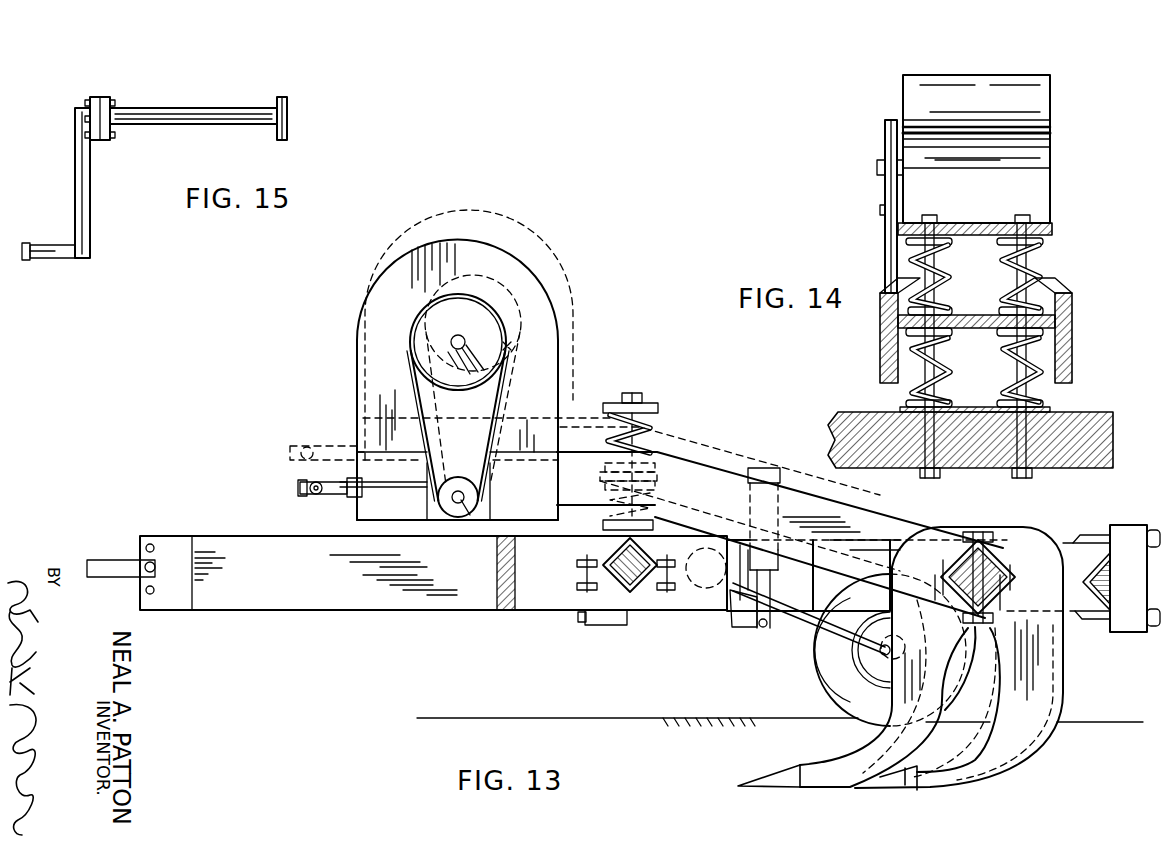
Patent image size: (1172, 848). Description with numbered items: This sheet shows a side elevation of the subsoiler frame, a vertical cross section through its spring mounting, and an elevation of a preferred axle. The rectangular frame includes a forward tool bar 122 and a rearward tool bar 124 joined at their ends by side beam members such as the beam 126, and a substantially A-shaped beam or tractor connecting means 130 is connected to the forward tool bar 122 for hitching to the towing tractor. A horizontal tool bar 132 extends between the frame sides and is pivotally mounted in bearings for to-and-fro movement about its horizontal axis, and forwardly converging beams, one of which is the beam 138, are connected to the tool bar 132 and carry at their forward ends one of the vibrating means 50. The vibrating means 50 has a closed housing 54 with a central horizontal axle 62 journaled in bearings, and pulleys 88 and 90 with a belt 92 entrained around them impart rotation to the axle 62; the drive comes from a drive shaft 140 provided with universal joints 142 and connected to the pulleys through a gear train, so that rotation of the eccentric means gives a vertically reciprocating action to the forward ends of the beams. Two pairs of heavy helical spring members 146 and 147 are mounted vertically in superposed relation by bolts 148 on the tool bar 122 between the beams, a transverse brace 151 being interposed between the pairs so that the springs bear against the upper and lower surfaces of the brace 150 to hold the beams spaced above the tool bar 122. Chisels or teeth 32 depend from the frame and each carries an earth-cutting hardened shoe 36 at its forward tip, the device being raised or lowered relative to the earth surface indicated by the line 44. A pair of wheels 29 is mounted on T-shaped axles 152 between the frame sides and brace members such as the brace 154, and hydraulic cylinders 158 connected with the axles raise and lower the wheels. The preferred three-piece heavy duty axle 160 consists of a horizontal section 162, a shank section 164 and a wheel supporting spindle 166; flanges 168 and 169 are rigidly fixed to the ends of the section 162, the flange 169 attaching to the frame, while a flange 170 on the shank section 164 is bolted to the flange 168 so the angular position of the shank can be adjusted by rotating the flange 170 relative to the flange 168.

In FIG. 13, the wheels 29 is at (822, 678).
In FIG. 13, the chisels or teeth 32 is at (848, 749).
In FIG. 13, the shoe or plate 36 is at (740, 785).
In FIG. 13, the surface of the earth 44 is at (478, 717).
In FIG. 13, the vibrating means 50 is at (371, 266).
In FIG. 14, the vibrating means 50 is at (895, 100).
In FIG. 13, the housing 54 is at (358, 337).
In FIG. 13, the axle 62 is at (462, 322).
In FIG. 13, the pulley 88 is at (492, 478).
In FIG. 13, the pulley 90 is at (510, 345).
In FIG. 14, the pulley 90 is at (885, 141).
In FIG. 13, the belt 92 is at (504, 398).
In FIG. 14, the belt 92 is at (897, 240).
In FIG. 13, the forward tool bar 122 is at (600, 563).
In FIG. 14, the forward tool bar 122 is at (830, 430).
In FIG. 13, the rearward tool bar 124 is at (1097, 576).
In FIG. 13, the beam member 126 is at (1070, 612).
In FIG. 13, the A-shaped beam or tractor connecting means 130 is at (256, 540).
In FIG. 14, the A-shaped beam or tractor connecting means 130 is at (1060, 290).
In FIG. 13, the tool bar 132 is at (993, 588).
In FIG. 13, the beam member 138 is at (858, 501).
In FIG. 13, the drive shaft 140 is at (380, 490).
In FIG. 13, the universal joints 142 is at (320, 445).
In FIG. 13, the helical spring members 146 is at (655, 425).
In FIG. 14, the helical spring members 146 is at (992, 268).
In FIG. 13, the helical spring members 147 is at (603, 525).
In FIG. 14, the helical spring members 147 is at (950, 372).
In FIG. 13, the bolts 148 is at (640, 393).
In FIG. 14, the bolts 148 is at (1012, 218).
In FIG. 13, the brace 150 is at (654, 527).
In FIG. 14, the brace 150 is at (900, 409).
In FIG. 13, the transverse brace 151 is at (658, 474).
In FIG. 14, the transverse brace 151 is at (952, 310).
In FIG. 13, the T-shaped axles 152 is at (796, 627).
In FIG. 13, the brace member 154 is at (703, 612).
In FIG. 13, the hydraulic cylinders 158 is at (748, 501).
In FIG. 15, the axle 160 is at (154, 158).
In FIG. 15, the horizontal section 162 is at (212, 108).
In FIG. 15, the shank section 164 is at (75, 186).
In FIG. 15, the wheel supporting section or spindle 166 is at (50, 245).
In FIG. 15, the flange 168 is at (100, 97).
In FIG. 15, the flange 169 is at (278, 100).
In FIG. 15, the flange 170 is at (89, 100).